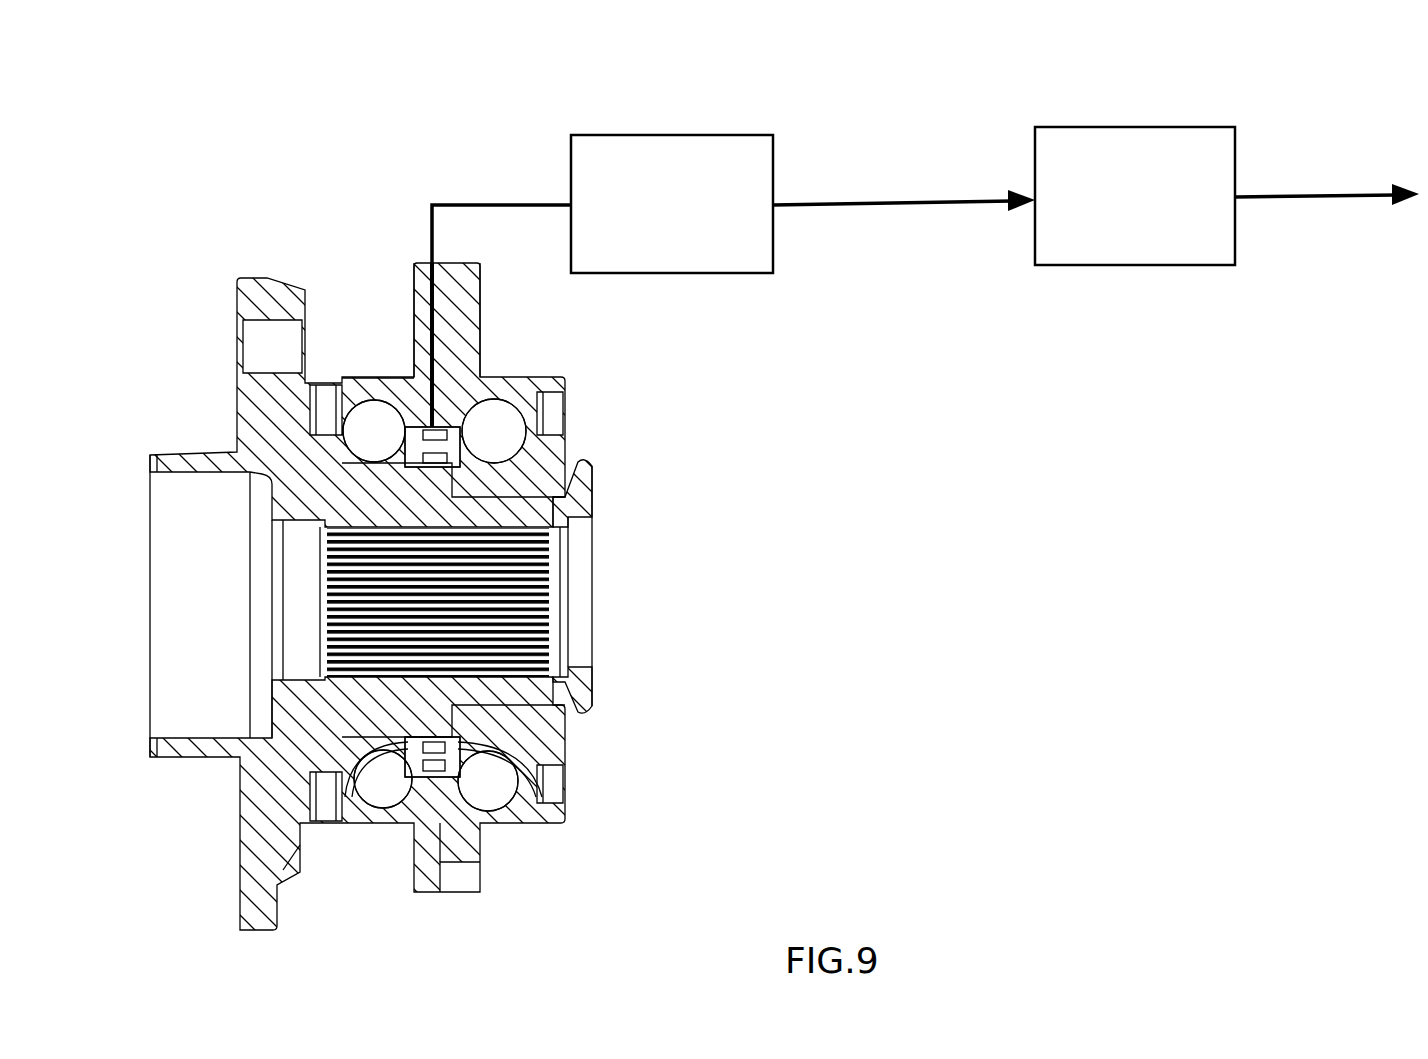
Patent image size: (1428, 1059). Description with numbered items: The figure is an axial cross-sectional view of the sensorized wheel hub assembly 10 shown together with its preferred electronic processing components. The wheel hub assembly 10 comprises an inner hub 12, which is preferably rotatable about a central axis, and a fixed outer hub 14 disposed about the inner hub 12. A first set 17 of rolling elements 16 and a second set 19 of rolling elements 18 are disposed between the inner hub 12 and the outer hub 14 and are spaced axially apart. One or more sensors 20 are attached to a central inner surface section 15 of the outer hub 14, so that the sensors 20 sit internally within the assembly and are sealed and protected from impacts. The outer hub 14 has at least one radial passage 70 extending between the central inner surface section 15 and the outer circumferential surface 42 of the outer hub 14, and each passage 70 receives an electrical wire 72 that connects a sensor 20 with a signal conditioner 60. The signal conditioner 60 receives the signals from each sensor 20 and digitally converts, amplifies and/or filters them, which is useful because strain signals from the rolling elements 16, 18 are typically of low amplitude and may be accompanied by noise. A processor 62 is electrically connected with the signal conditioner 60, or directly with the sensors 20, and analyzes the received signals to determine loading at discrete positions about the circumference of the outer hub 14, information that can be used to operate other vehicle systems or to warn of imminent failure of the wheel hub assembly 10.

The sensorized wheel hub assembly 10 is at (684, 431).
The inner hub 12 is at (618, 704).
The outer hub 14 is at (582, 353).
The central inner surface section 15 is at (452, 440).
The rolling elements 16 is at (503, 410).
The first set of rolling elements 17 is at (500, 802).
The rolling elements 18 is at (371, 412).
The second set of rolling elements 19 is at (381, 798).
The sensor 20 is at (420, 460).
The outer circumferential surface 42 is at (391, 362).
The signal conditioner 60 is at (667, 128).
The processor 62 is at (1120, 116).
The radial passage 70 is at (440, 343).
The electrical wire 72 is at (432, 226).